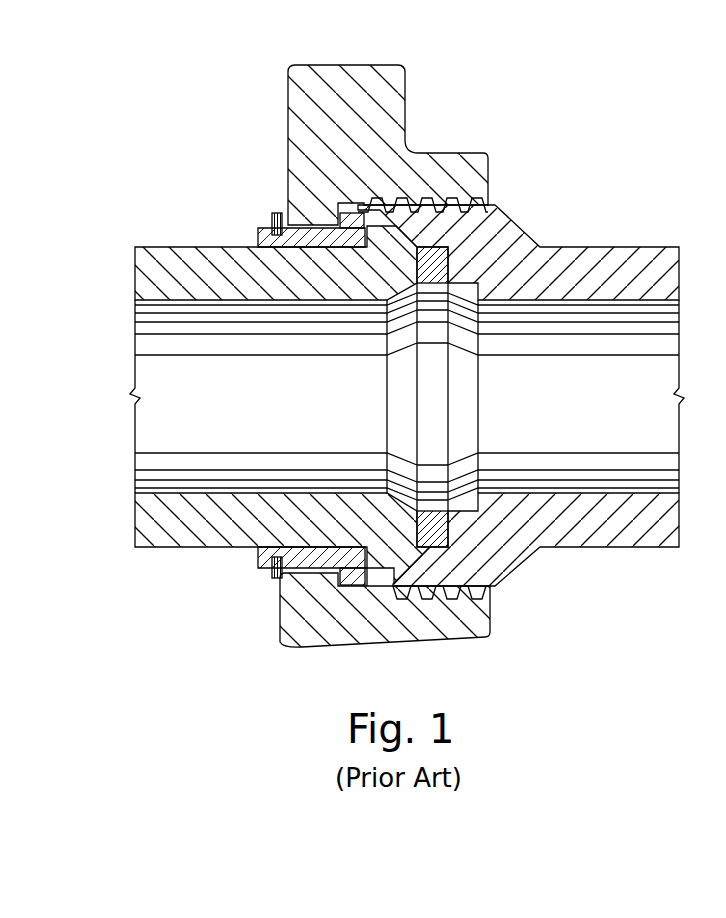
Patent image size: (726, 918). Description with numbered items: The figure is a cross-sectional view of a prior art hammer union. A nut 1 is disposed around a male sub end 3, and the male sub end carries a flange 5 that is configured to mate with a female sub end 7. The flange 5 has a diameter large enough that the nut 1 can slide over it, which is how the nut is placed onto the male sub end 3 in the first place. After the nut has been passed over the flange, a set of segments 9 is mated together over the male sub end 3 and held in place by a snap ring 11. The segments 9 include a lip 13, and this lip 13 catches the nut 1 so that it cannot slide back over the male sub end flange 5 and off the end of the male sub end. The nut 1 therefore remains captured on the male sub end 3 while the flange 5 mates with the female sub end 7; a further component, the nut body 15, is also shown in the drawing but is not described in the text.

The nut 1 is at (473, 170).
The male sub end 3 is at (143, 270).
The flange 5 is at (377, 234).
The female sub end 7 is at (588, 257).
The segments 9 is at (325, 204).
The snap ring 11 is at (273, 214).
The lip 13 is at (348, 226).
The nut 15 is at (322, 65).